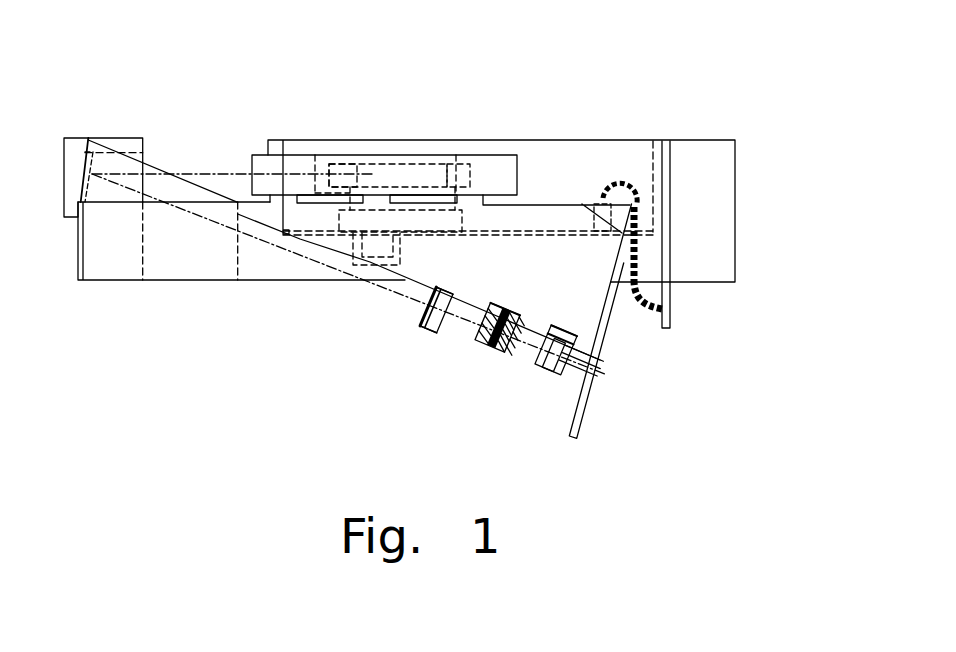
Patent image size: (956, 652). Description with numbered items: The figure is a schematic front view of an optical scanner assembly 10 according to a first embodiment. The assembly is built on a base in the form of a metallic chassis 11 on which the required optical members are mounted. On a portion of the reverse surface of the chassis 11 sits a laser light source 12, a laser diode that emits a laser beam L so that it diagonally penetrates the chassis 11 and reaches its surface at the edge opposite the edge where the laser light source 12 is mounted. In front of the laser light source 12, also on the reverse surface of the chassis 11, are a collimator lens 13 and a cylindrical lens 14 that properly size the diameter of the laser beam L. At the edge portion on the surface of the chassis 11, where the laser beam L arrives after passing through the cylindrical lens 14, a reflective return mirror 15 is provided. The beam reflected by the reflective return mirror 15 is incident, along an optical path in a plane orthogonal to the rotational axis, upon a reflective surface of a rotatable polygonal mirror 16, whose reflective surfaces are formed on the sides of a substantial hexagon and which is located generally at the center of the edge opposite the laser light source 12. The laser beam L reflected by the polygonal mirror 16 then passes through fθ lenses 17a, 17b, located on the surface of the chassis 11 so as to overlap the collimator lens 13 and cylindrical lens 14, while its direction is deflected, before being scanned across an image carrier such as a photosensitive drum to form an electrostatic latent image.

The optical scanner assembly 10 is at (695, 58).
The metallic chassis 11 is at (552, 217).
The laser light source 12 is at (573, 350).
The collimator lens 13 is at (477, 333).
The cylindrical lens 14 is at (418, 318).
The reflective return mirror 15 is at (92, 155).
The polygonal mirror 16 is at (397, 163).
The fθ lens 17a is at (308, 157).
The fθ lens 17b is at (497, 170).
The laser beam L is at (377, 290).